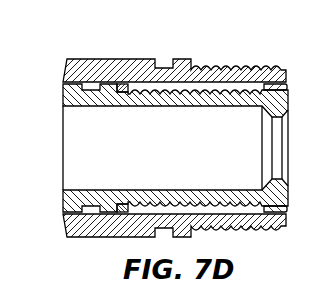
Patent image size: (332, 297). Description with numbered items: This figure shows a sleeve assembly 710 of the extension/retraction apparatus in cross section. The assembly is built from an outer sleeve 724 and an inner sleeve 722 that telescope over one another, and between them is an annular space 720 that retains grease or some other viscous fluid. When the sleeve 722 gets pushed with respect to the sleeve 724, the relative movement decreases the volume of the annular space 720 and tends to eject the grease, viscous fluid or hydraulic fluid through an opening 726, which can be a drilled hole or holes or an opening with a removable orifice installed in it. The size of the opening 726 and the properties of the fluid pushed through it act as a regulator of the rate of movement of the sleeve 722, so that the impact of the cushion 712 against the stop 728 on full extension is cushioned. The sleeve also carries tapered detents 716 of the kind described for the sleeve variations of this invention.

The sleeve assembly 710 is at (49, 69).
The cushion 712 is at (123, 205).
The tapered detents 716 is at (123, 92).
The annular space 720 is at (205, 84).
The sleeve 722 is at (89, 104).
The sleeve 724 is at (108, 62).
The opening 726 is at (288, 84).
The stop 728 is at (264, 210).